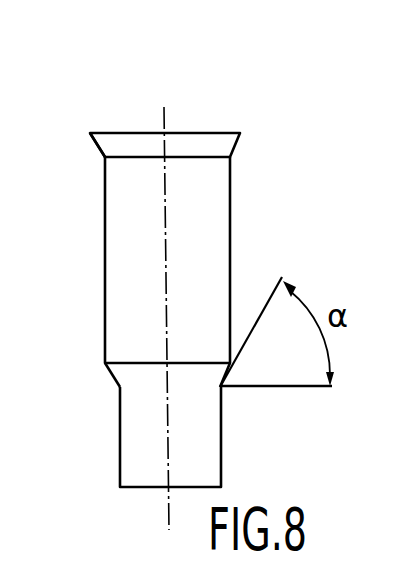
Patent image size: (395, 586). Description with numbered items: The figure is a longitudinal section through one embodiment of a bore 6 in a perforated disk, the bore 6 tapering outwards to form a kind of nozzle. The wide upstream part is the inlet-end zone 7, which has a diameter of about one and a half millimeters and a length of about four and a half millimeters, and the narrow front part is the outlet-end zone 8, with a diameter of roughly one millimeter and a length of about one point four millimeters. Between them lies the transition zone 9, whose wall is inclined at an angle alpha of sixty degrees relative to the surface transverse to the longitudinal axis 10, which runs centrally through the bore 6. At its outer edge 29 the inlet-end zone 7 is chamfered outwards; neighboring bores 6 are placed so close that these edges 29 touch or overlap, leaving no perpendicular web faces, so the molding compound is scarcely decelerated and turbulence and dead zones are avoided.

The bore 6 is at (224, 129).
The inlet-end zone 7 is at (205, 211).
The outlet-end zone 8 is at (143, 432).
The transition zone 9 is at (135, 373).
The longitudinal axis 10 is at (168, 267).
The outer edge 29 is at (97, 132).